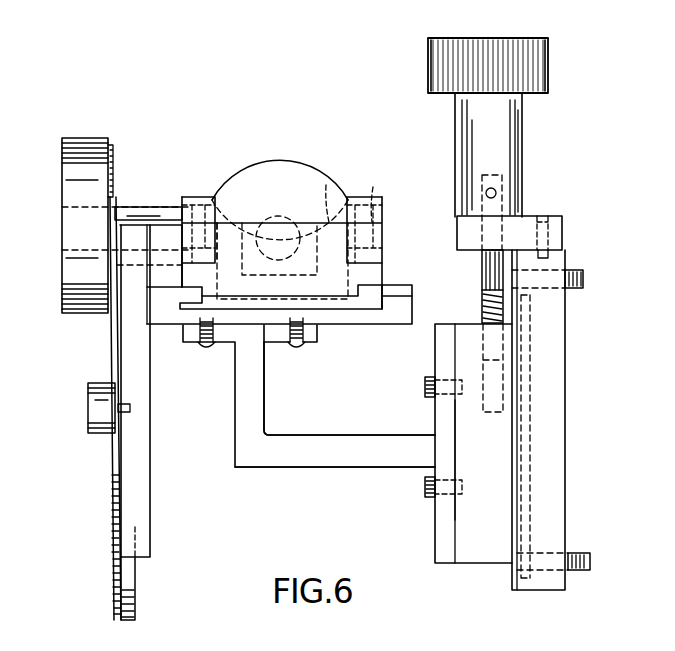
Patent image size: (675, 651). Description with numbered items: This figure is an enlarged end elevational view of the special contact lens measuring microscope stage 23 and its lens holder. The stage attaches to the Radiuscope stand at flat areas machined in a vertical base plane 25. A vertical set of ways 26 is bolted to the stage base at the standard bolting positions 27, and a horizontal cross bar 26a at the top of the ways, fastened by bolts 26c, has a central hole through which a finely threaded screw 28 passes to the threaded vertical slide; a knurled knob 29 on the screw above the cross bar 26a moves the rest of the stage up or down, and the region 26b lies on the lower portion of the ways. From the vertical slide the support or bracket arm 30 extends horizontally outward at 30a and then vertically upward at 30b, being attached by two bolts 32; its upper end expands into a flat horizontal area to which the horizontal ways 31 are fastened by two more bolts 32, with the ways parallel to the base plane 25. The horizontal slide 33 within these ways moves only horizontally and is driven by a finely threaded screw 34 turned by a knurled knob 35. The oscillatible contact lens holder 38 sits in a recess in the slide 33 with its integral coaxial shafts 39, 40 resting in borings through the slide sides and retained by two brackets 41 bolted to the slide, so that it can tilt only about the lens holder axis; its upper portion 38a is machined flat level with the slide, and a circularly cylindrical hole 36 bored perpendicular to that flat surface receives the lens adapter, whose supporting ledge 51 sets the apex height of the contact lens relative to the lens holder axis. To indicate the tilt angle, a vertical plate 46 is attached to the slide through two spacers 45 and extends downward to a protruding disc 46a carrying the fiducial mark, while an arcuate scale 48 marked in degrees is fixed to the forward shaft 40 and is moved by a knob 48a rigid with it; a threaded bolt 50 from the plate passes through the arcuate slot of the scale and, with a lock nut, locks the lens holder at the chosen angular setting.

The microscope stage 23 is at (294, 478).
The base plane 25 is at (560, 338).
The vertical ways 26 is at (530, 380).
The horizontal cross bar 26a is at (470, 232).
The lower portion of mounting plate 26b is at (490, 466).
The bolts 26c is at (560, 232).
The standard bolting positions 27 is at (578, 272).
The finely threaded screw 28 is at (490, 278).
The knurled knob 29 is at (525, 50).
The support or bracket arm 30 is at (337, 436).
The horizontal portion of bracket arm 30a is at (360, 458).
The vertical portion of bracket arm 30b is at (260, 400).
The horizontal ways 31 is at (378, 293).
The bolts 32 is at (210, 350).
The horizontal slide 33 is at (353, 306).
The finely threaded screw 34 is at (290, 214).
The knurled knob 35 is at (277, 165).
The circularly cylindrical hole 36 is at (331, 188).
The contact lens holder 38 is at (217, 272).
The upper portion of contact lens holder 38a is at (232, 222).
The shaft 39 is at (374, 187).
The shaft 40 is at (138, 213).
The brackets 41 is at (198, 200).
The spacers 45 is at (165, 273).
The vertical plate 46 is at (148, 440).
The protruding disc 46a is at (137, 579).
The arcuate scale 48 is at (112, 466).
The knob 48a is at (82, 151).
The threaded bolt 50 is at (130, 408).
The supporting ledge 51 is at (95, 386).